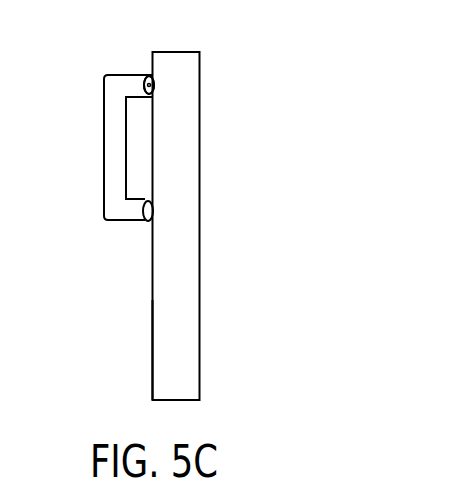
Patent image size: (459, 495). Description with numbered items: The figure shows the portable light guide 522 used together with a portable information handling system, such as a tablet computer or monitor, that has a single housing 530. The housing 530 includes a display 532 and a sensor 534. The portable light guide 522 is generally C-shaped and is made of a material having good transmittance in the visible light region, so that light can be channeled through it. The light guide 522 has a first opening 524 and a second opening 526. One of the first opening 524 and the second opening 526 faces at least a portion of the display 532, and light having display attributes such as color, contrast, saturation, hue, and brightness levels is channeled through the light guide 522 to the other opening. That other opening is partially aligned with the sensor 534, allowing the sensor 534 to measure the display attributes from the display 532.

The portable light guide 522 is at (103, 153).
The first opening 524 is at (146, 81).
The second opening 526 is at (143, 218).
The housing 530 is at (200, 72).
The display 532 is at (177, 350).
The sensor 534 is at (153, 85).